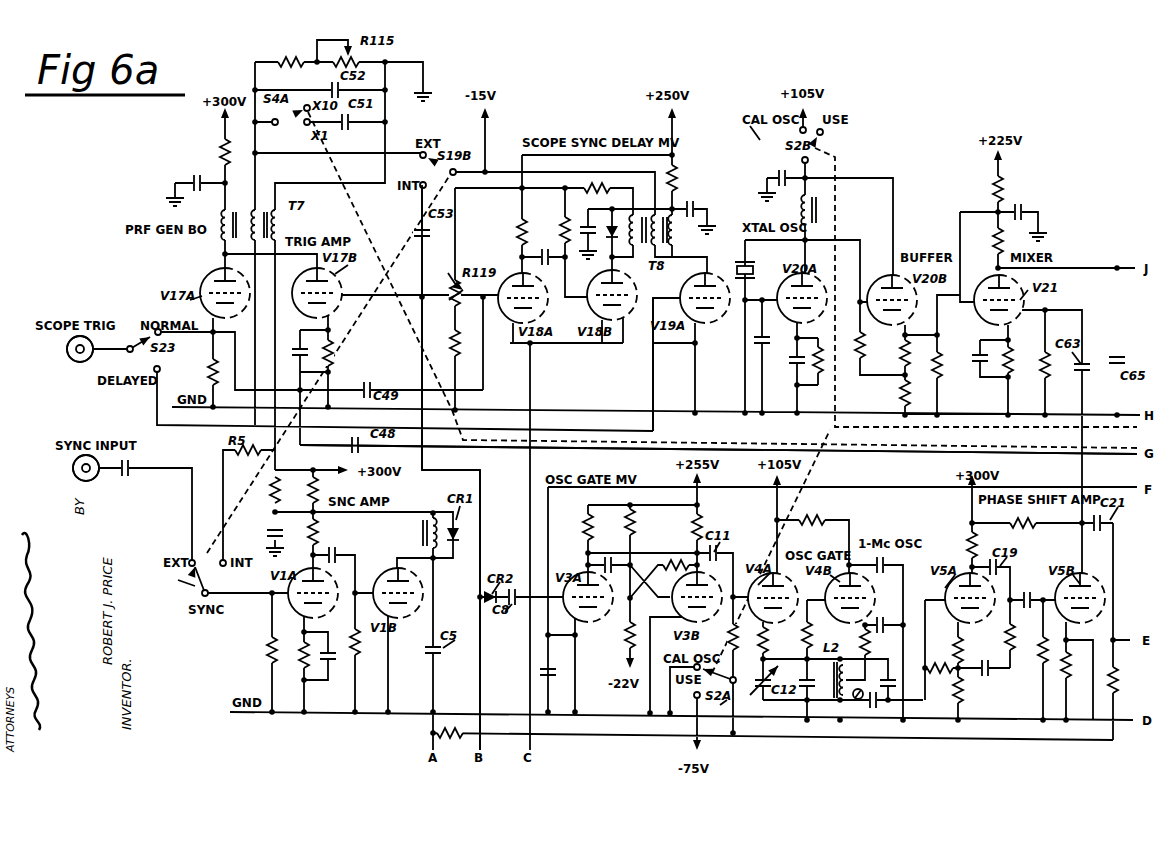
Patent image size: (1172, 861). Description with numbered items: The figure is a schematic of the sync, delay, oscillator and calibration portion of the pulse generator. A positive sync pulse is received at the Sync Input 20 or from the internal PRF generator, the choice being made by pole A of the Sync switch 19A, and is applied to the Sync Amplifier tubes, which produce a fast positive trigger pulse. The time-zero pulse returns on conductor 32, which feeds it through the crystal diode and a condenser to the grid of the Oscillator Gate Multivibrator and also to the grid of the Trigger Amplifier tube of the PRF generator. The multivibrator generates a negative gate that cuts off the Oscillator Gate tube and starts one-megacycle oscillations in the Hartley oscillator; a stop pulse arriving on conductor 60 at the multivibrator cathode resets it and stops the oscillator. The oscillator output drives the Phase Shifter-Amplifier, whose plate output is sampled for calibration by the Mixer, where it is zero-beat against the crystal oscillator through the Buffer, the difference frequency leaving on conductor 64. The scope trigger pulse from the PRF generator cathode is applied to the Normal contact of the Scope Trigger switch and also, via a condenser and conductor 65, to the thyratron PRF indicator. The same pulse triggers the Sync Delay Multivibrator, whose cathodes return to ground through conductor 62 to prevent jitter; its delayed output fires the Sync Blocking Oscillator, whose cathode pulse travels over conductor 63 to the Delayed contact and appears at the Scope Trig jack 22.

The Scope Trig jack 22 is at (67, 349).
The Sync Input 20 is at (73, 472).
The pole A of Sync switch 19A is at (191, 581).
The conductor 32 is at (421, 290).
The conductor 60 is at (549, 524).
The conductor 62 is at (531, 398).
The conductor 63 is at (652, 390).
The conductor 64 is at (1068, 270).
The conductor 65 is at (908, 455).